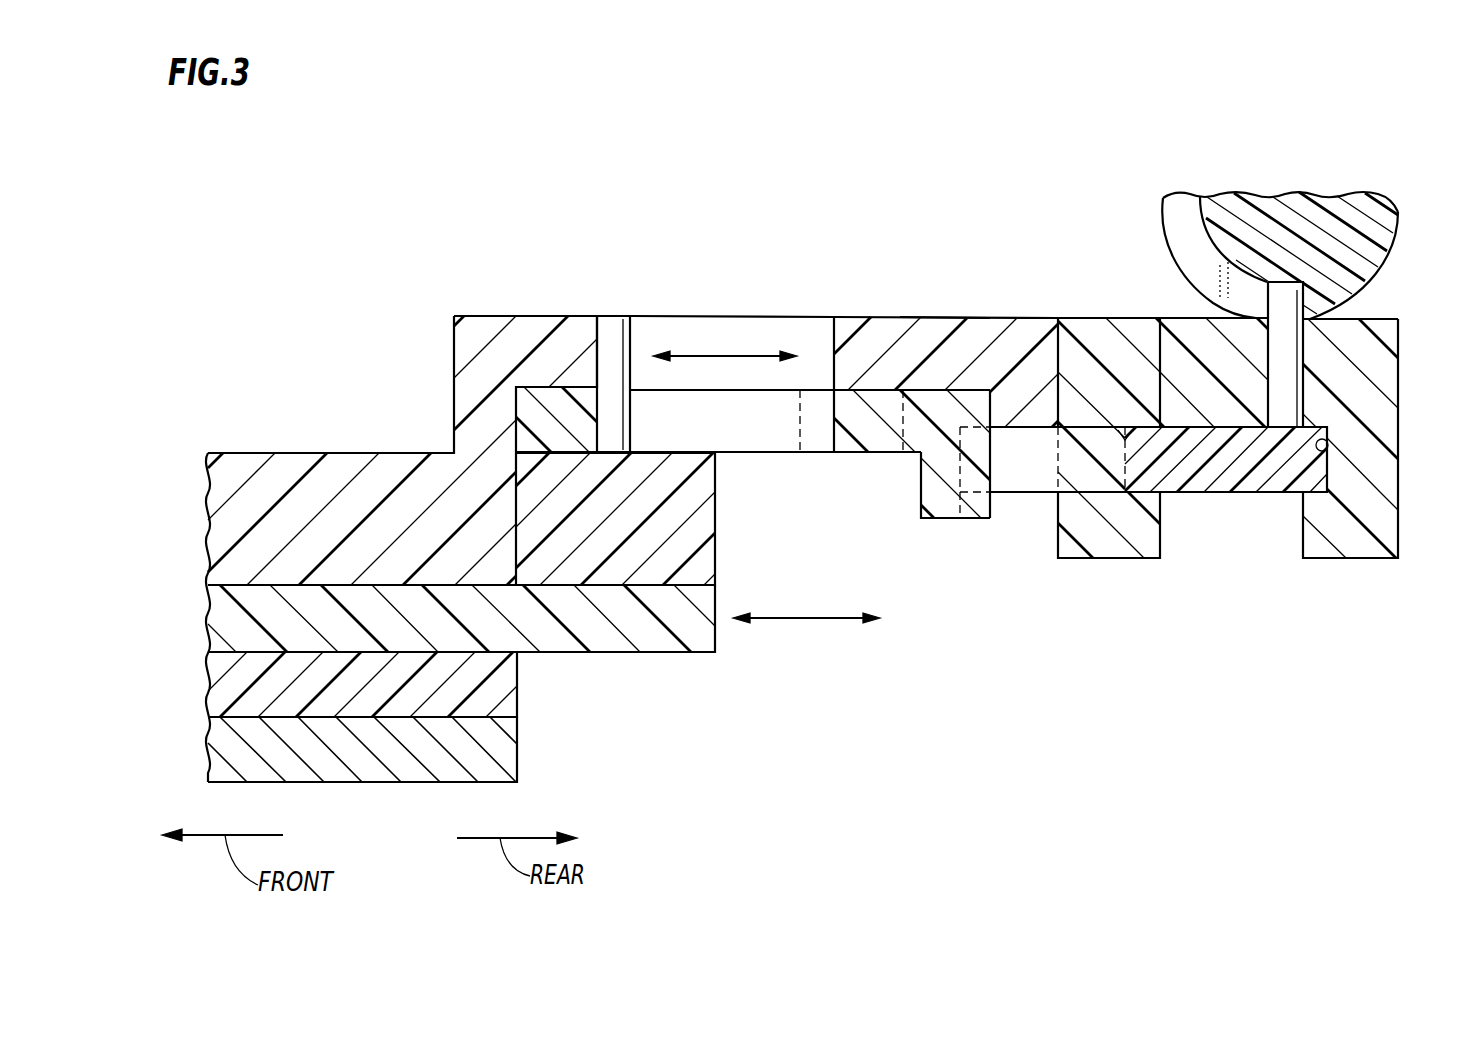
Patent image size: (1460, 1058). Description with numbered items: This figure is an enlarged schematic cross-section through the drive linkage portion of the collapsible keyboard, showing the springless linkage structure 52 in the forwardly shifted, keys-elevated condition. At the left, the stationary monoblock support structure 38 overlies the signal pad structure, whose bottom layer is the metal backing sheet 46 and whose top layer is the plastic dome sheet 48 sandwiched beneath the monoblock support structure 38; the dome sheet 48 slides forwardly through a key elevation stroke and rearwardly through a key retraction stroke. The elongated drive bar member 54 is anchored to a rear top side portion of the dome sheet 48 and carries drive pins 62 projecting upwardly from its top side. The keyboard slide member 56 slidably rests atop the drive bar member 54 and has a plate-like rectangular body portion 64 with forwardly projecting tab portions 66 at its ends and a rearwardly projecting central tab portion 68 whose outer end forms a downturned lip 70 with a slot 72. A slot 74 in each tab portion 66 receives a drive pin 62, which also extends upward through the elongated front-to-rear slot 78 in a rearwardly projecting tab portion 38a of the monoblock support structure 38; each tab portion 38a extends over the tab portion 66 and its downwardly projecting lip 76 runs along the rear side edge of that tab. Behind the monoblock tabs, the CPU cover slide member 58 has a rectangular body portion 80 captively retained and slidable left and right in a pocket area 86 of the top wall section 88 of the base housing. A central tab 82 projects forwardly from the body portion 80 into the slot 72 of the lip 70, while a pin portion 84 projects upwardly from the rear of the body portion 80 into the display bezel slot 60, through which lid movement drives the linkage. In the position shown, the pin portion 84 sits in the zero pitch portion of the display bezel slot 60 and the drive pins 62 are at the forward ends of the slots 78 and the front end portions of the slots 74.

The monoblock support structure 38 is at (342, 470).
The rearwardly projecting tab portion 38a is at (937, 325).
The metal backing sheet 46 is at (243, 752).
The dome sheet 48 is at (240, 622).
The springless linkage structure 52 is at (938, 228).
The drive bar member 54 is at (722, 518).
The keyboard slide member 56 is at (875, 458).
The CPU cover slide member 58 is at (1218, 499).
The display bezel slot 60 is at (1190, 242).
The drive pin 62 is at (613, 327).
The body portion 64 is at (870, 373).
The forwardly projecting tab portion 66 is at (556, 400).
The central tab portion 68 is at (988, 345).
The downturned lip 70 is at (920, 490).
The slot 72 is at (978, 510).
The slot 74 is at (710, 422).
The downwardly projecting lip 76 is at (1060, 370).
The elongated slot 78 is at (770, 333).
The body portion 80 is at (1302, 480).
The central tab 82 is at (1040, 495).
The pin portion 84 is at (1288, 358).
The pocket area 86 is at (1325, 440).
The top wall section 88 is at (1343, 332).